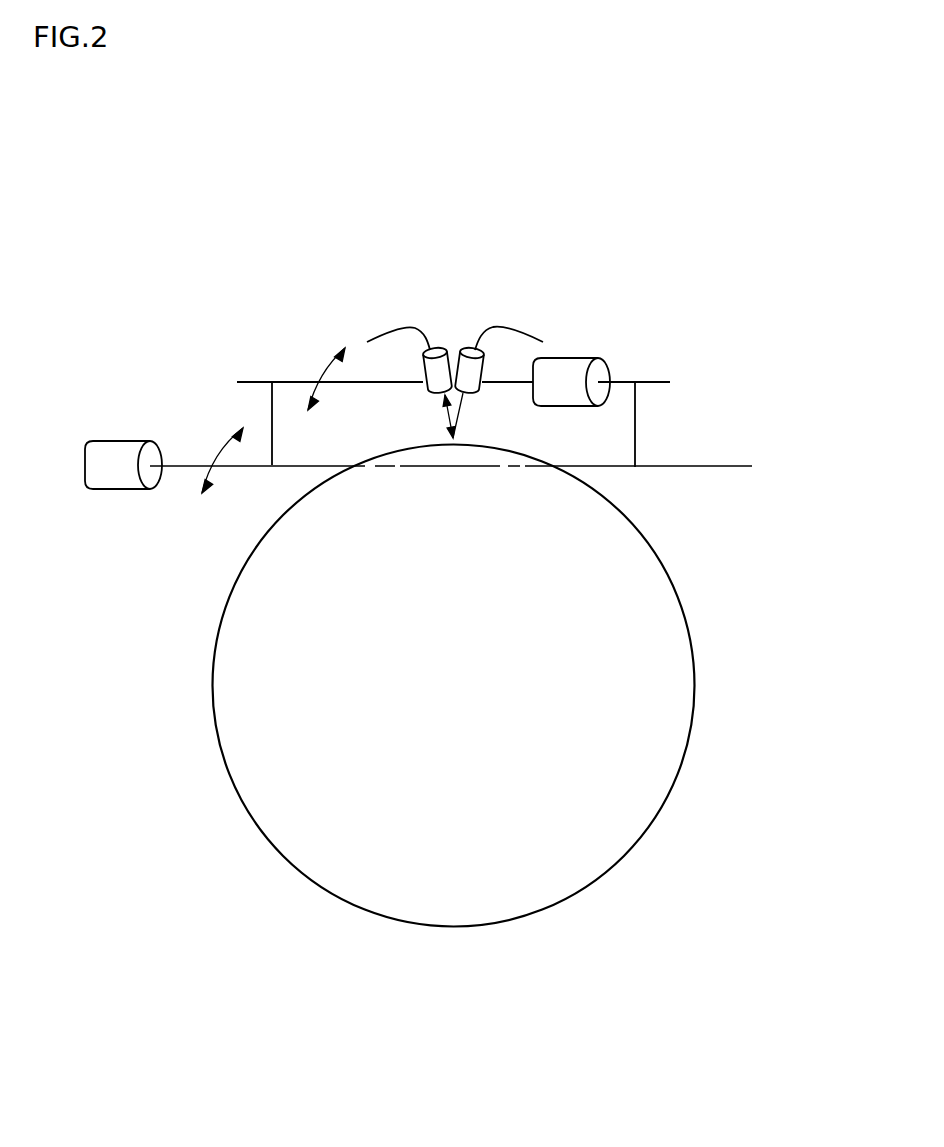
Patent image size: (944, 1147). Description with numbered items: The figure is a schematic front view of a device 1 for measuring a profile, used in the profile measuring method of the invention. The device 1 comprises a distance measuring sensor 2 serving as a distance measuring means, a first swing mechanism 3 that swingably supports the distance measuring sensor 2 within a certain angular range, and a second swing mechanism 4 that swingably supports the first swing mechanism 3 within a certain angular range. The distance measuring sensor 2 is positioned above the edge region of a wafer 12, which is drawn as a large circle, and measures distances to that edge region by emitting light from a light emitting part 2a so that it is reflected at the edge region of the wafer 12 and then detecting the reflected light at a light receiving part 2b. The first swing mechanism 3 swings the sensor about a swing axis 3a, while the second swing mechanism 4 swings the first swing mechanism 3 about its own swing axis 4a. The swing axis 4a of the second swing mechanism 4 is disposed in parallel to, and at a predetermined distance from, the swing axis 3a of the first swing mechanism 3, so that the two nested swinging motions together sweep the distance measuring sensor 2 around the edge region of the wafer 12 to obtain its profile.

The device for measuring a profile 1 is at (647, 343).
The distance measuring sensor 2 is at (455, 293).
The light emitting part 2a is at (475, 350).
The light receiving part 2b is at (432, 350).
The first swing mechanism 3 is at (587, 357).
The swing axis of the first swing mechanism 3a is at (257, 380).
The second swing mechanism 4 is at (272, 417).
The swing axis of the second swing mechanism 4a is at (177, 470).
The wafer 12 is at (633, 847).